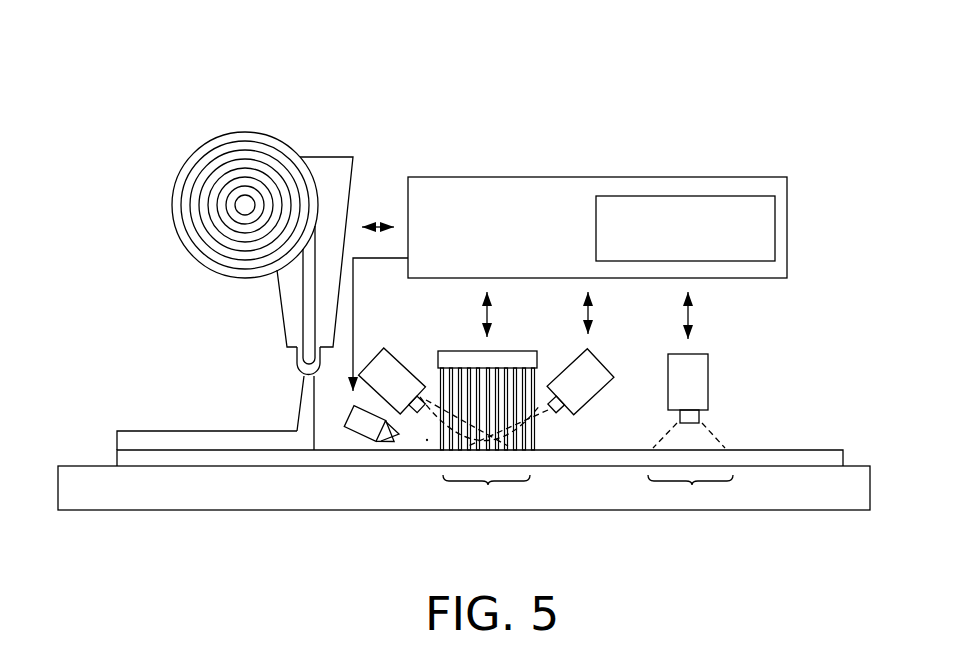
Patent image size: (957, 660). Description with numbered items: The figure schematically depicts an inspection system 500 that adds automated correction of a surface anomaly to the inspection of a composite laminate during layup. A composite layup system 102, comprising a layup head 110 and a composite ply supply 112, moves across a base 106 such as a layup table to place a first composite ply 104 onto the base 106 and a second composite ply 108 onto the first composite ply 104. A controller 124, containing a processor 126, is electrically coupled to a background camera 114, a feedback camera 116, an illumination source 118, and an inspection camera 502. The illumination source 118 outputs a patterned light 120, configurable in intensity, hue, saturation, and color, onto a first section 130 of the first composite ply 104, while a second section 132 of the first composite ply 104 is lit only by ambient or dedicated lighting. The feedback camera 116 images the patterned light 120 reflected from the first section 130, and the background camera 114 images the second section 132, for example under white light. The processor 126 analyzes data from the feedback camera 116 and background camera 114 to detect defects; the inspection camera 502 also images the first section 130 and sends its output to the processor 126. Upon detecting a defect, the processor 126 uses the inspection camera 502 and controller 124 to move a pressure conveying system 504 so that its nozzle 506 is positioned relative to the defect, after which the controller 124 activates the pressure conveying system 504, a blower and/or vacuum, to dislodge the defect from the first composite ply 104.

The inspection system 500 is at (662, 71).
The composite layup system 102 is at (155, 131).
The composite ply supply 112 is at (244, 140).
The layup head 110 is at (332, 160).
The controller 124 is at (515, 177).
The processor 126 is at (685, 197).
The illumination source 118 is at (457, 360).
The inspection camera 502 is at (400, 370).
The feedback camera 116 is at (593, 387).
The background camera 114 is at (705, 375).
The second composite ply 108 is at (175, 431).
The first composite ply 104 is at (117, 460).
The base 106 is at (97, 512).
The pressure conveying system 504 is at (363, 423).
The nozzle 506 is at (380, 432).
The patterned light 120 is at (426, 440).
The first section 130 is at (488, 484).
The second section 132 is at (692, 484).